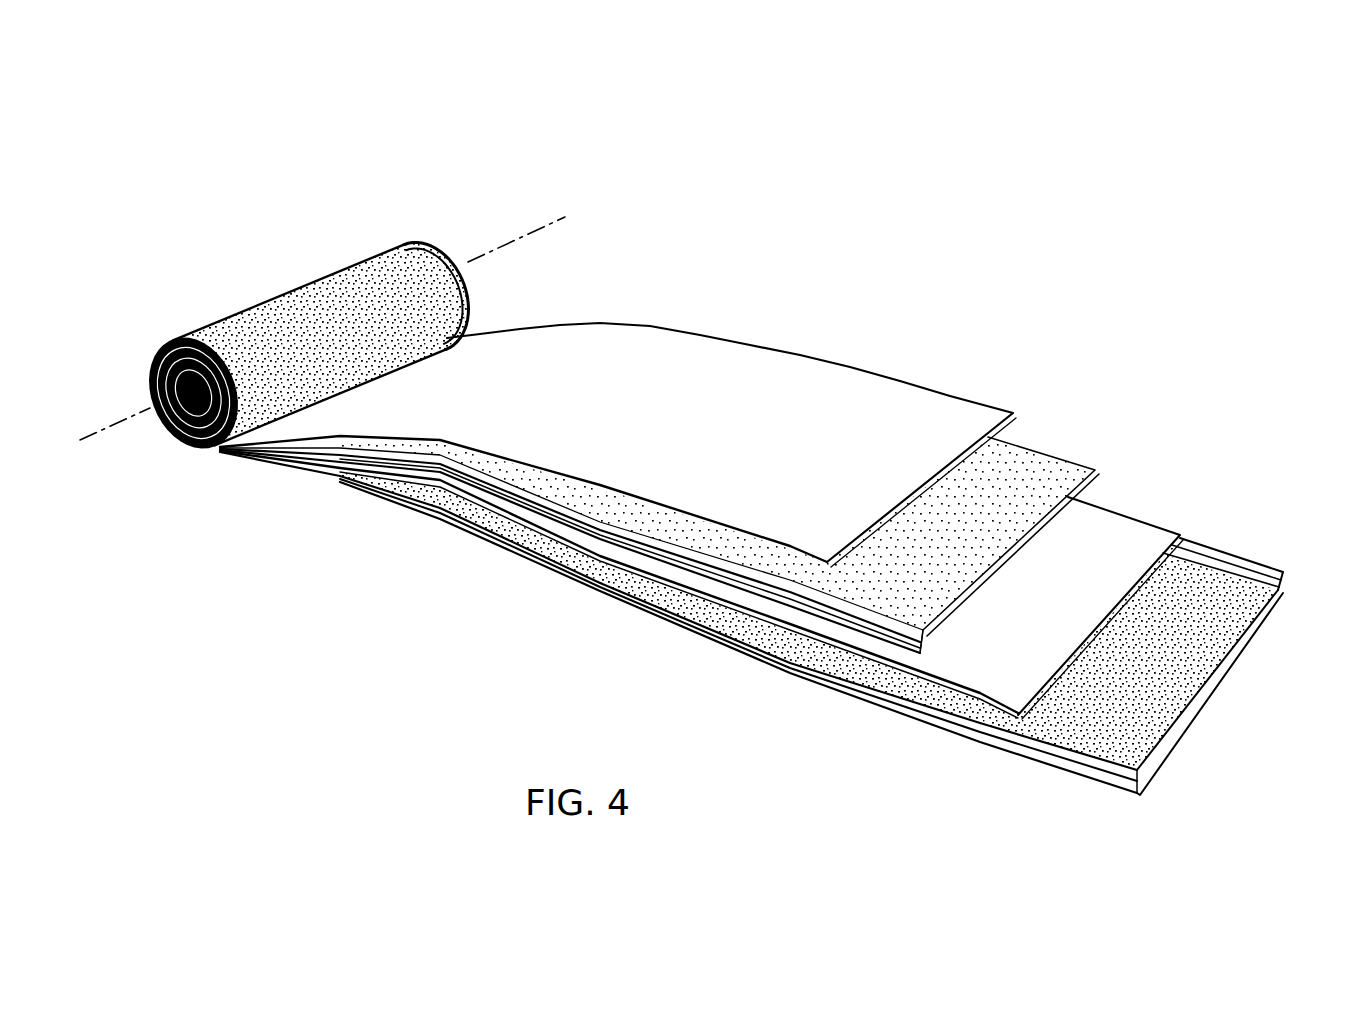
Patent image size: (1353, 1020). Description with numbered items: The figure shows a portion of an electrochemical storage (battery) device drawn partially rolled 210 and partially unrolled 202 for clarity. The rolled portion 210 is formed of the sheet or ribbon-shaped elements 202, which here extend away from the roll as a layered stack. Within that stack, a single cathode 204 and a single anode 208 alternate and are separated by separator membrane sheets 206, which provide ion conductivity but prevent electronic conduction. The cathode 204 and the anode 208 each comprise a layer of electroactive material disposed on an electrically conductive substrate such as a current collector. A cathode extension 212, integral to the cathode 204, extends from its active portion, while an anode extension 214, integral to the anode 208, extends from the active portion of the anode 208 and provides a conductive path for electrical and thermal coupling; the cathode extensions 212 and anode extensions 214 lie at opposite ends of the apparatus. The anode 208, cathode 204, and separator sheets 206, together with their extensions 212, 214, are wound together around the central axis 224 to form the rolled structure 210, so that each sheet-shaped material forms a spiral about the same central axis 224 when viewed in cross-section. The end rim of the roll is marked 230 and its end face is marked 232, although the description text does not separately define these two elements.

The unrolled portion 202 is at (746, 165).
The cathode 204 is at (1056, 452).
The separator membrane sheet 206 is at (812, 352).
The anode 208 is at (1228, 673).
The rolled portion 210 is at (293, 150).
The cathode extension 212 is at (928, 630).
The anode extension 214 is at (1270, 568).
The central axis 224 is at (559, 222).
The roll end rim 230 is at (433, 258).
The roll end face 232 is at (161, 332).